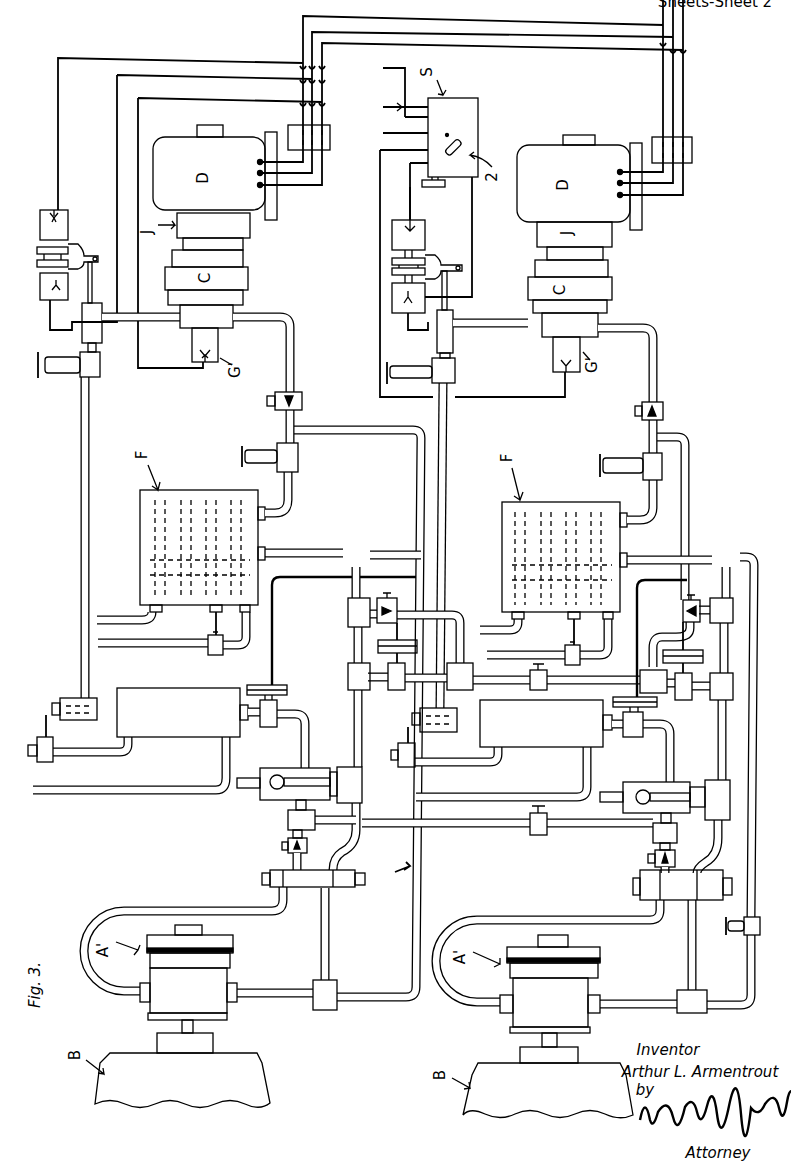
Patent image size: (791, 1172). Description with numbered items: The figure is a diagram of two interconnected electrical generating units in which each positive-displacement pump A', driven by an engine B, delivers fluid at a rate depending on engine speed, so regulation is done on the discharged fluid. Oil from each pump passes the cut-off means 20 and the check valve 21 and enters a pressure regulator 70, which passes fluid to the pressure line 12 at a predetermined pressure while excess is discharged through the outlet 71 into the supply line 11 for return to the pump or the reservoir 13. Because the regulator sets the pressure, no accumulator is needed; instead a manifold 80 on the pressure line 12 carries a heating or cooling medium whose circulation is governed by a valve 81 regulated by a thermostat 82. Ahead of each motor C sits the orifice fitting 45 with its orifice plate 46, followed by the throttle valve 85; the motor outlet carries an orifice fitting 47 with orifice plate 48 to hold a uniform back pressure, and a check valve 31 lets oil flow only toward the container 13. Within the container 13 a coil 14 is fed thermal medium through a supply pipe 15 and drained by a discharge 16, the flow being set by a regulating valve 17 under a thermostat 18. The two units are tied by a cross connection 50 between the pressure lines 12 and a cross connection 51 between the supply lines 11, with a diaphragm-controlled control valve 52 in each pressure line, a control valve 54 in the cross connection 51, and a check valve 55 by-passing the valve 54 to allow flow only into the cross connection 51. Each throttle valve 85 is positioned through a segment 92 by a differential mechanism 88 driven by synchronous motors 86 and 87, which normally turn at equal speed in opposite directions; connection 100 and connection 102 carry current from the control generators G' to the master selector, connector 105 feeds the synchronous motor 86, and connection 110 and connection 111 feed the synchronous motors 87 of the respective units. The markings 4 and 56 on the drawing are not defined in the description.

The supply line 4 is at (395, 875).
The supply line 11 is at (352, 708).
The pressure line 12 is at (80, 468).
The container 13 is at (206, 492).
The coil 14 is at (168, 490).
The supply pipe 15 is at (112, 646).
The discharge 16 is at (110, 617).
The regulating valve 17 is at (214, 656).
The thermostat 18 is at (212, 622).
The cut-off means 20 is at (327, 889).
The check valve 21 is at (284, 845).
The check valve 31 is at (302, 400).
The orifice fitting 45 is at (100, 378).
The orifice plate 46 is at (70, 374).
The orifice fitting 47 is at (300, 470).
The orifice plate 48 is at (296, 472).
The cross connection 50 is at (470, 824).
The cross connection 51 is at (636, 640).
The control valve 52 is at (266, 727).
The control valve 54 is at (348, 668).
The check valve 55 is at (348, 610).
The bypass pipe 56 is at (375, 445).
The pressure regulator 70 is at (308, 768).
The outlet 71 is at (278, 775).
The manifold 80 is at (364, 717).
The valve 81 is at (38, 735).
The thermostat 82 is at (74, 696).
The throttle valve 85 is at (102, 340).
The synchronous motor 86 is at (50, 305).
The synchronous motor 87 is at (52, 210).
The differential mechanism 88 is at (60, 248).
The segment 92 is at (90, 248).
The connection 100 is at (137, 150).
The connection 102 is at (467, 230).
The connector 105 is at (116, 122).
The connection 110 is at (147, 58).
The connection 111 is at (412, 192).